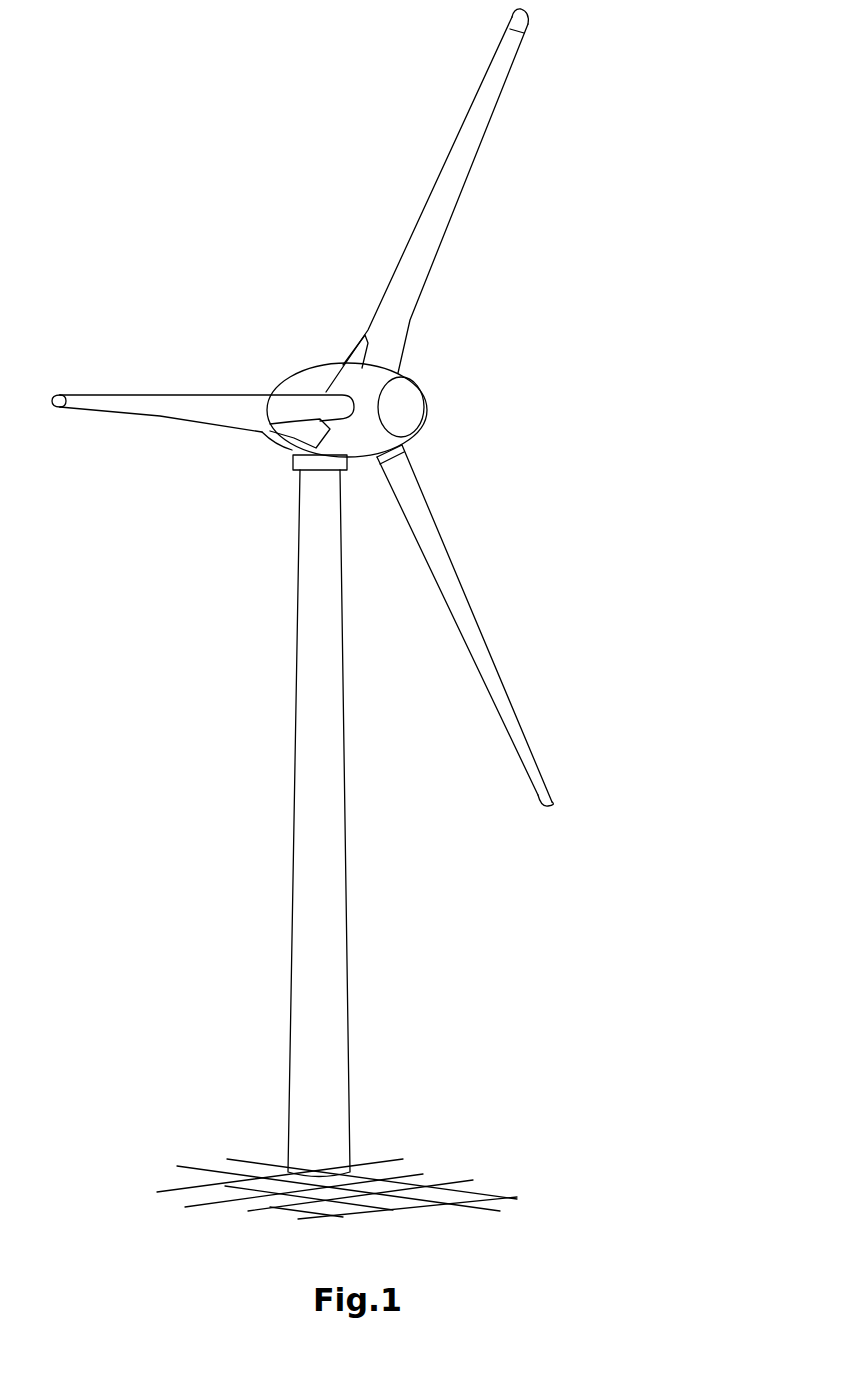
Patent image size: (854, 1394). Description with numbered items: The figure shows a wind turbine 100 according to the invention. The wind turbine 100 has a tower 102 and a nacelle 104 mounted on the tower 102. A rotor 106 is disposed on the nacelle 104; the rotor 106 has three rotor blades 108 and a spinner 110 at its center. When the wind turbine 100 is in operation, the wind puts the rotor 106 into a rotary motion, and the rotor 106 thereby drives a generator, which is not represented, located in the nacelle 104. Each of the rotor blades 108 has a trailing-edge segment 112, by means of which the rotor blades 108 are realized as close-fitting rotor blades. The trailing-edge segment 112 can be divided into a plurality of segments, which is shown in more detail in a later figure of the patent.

The wind turbine 100 is at (198, 604).
The tower 102 is at (327, 932).
The nacelle 104 is at (312, 380).
The rotor 106 is at (502, 317).
The rotor blades 108 is at (470, 148).
The spinner 110 is at (405, 407).
The trailing-edge segment 112 is at (352, 354).